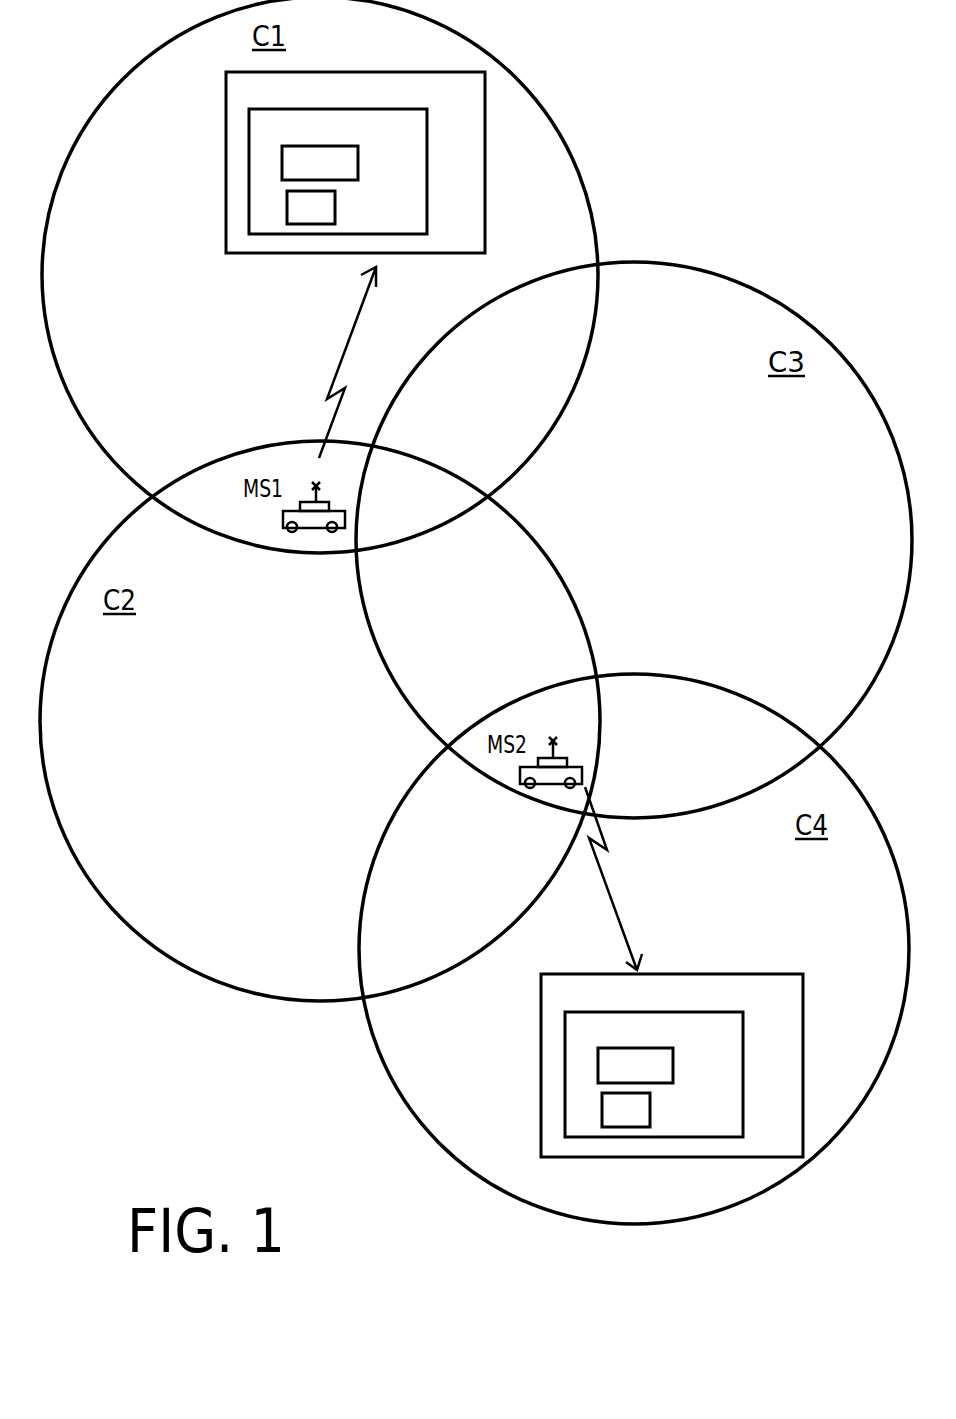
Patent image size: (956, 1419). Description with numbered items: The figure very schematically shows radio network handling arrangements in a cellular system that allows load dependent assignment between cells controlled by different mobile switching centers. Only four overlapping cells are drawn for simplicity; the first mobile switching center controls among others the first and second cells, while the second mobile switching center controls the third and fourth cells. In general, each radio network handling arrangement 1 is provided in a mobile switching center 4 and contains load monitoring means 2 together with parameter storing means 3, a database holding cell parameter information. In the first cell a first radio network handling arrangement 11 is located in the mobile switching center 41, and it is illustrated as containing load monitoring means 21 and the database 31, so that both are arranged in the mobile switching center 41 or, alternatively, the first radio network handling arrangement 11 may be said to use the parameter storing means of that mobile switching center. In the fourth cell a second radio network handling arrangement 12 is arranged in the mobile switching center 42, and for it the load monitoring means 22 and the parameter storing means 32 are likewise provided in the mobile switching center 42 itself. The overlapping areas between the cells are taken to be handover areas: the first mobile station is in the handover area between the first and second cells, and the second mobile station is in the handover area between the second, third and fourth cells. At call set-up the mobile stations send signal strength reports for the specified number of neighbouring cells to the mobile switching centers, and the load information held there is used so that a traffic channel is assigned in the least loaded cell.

The radio network handling arrangement 1 is at (468, 614).
The load monitoring means 2 is at (379, 172).
The parameter storing means 3 is at (382, 215).
The mobile switching center 4 is at (305, 174).
The first radio network handling arrangement 11 is at (427, 143).
The load monitoring means 21 is at (358, 163).
The database for holding cell parameter information 31 is at (335, 206).
The mobile switching center 41 is at (226, 147).
The second radio network handling arrangement 12 is at (743, 1047).
The load monitoring means 22 is at (673, 1067).
The parameter storing means 32 is at (650, 1108).
The mobile switching center 42 is at (541, 1049).